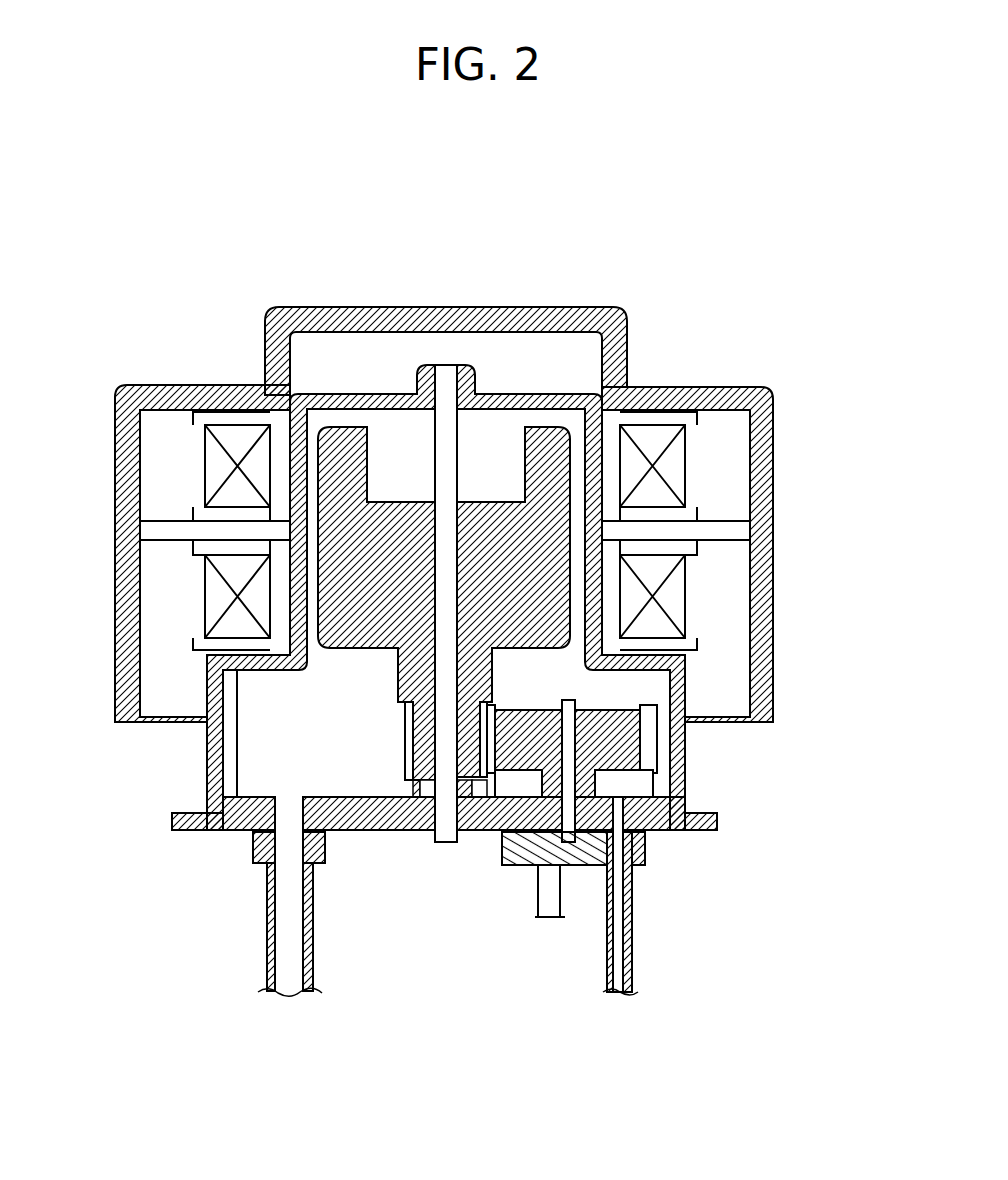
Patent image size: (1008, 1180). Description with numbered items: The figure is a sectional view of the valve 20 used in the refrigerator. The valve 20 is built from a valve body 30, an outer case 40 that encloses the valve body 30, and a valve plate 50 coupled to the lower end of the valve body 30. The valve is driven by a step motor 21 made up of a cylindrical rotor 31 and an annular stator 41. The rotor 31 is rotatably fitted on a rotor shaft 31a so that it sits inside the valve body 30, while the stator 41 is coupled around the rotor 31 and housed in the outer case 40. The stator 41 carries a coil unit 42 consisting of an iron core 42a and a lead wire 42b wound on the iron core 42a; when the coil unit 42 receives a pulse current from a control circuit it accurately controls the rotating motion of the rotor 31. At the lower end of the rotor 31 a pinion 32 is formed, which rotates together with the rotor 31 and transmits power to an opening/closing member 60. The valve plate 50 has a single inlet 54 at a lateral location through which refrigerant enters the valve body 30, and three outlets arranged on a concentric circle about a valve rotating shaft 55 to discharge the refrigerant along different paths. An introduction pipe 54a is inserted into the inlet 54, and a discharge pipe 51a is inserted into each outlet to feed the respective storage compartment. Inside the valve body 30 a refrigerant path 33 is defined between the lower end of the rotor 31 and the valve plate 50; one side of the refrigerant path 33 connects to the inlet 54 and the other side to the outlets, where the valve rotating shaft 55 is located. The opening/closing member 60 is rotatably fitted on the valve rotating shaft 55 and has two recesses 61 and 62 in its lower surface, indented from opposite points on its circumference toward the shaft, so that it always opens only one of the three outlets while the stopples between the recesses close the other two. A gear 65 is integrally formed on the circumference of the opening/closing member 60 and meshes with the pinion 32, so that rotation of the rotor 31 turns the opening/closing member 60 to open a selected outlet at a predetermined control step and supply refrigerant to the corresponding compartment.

The valve 20 is at (468, 295).
The step motor 21 is at (168, 512).
The valve body 30 is at (367, 390).
The rotor 31 is at (347, 438).
The rotor shaft 31a is at (440, 845).
The pinion 32 is at (405, 748).
The refrigerant path 33 is at (276, 744).
The outer case 40 is at (728, 398).
The stator 41 is at (176, 530).
The coil unit 42 is at (752, 531).
The iron core 42a is at (692, 518).
The lead wire 42b is at (683, 465).
The valve plate 50 is at (182, 832).
The discharge pipe 51a is at (537, 907).
The inlet 54 is at (290, 805).
The introduction pipe 54a is at (267, 913).
The valve rotating shaft 55 is at (577, 704).
The opening/closing member 60 is at (663, 768).
The recess 61 is at (660, 788).
The recess 62 is at (490, 835).
The gear 65 is at (650, 743).